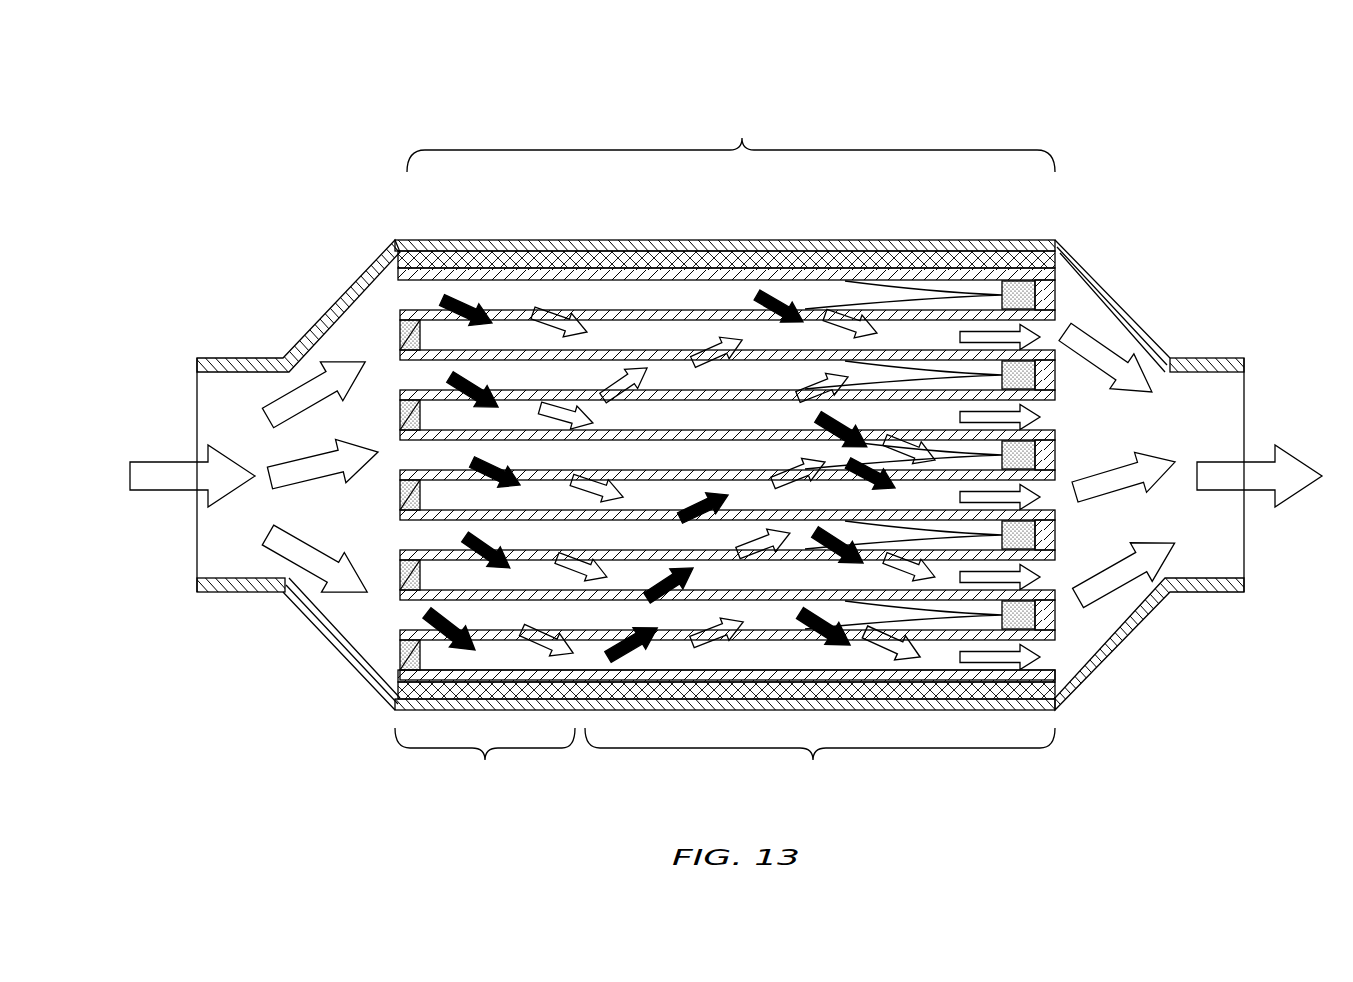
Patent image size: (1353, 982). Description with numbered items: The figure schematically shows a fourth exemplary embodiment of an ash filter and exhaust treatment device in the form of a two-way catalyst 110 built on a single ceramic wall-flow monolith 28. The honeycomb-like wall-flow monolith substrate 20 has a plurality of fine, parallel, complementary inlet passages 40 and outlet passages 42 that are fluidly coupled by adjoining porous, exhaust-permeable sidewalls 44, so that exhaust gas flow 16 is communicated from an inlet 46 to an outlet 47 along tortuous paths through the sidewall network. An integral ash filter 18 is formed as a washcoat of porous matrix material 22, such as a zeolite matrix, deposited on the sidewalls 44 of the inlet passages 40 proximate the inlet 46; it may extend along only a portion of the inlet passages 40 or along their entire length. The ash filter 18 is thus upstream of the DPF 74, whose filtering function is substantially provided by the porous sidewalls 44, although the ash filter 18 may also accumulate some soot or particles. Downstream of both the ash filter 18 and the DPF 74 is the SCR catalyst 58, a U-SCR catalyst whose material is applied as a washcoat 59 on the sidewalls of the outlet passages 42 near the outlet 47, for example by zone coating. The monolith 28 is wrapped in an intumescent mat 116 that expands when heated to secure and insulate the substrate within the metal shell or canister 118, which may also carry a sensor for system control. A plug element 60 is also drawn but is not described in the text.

The exhaust gas flow 16 is at (165, 470).
The ash filter 18 is at (485, 760).
The wall-flow monolith substrate 20 is at (497, 316).
The porous matrix material 22 is at (405, 628).
The ceramic wall-flow monolith 28 is at (832, 268).
The inlet passages 40 is at (640, 306).
The outlet passages 42 is at (683, 347).
The porous sidewalls 44 is at (569, 320).
The inlet 46 is at (425, 373).
The outlet 47 is at (1040, 412).
The SCR catalyst 58 is at (813, 760).
The washcoat 59 is at (958, 640).
The channel plug 60 is at (407, 493).
The DPF 74 is at (742, 138).
The two-way catalyst 110 is at (1012, 175).
The intumescent mat 116 is at (652, 262).
The canister 118 is at (1060, 250).